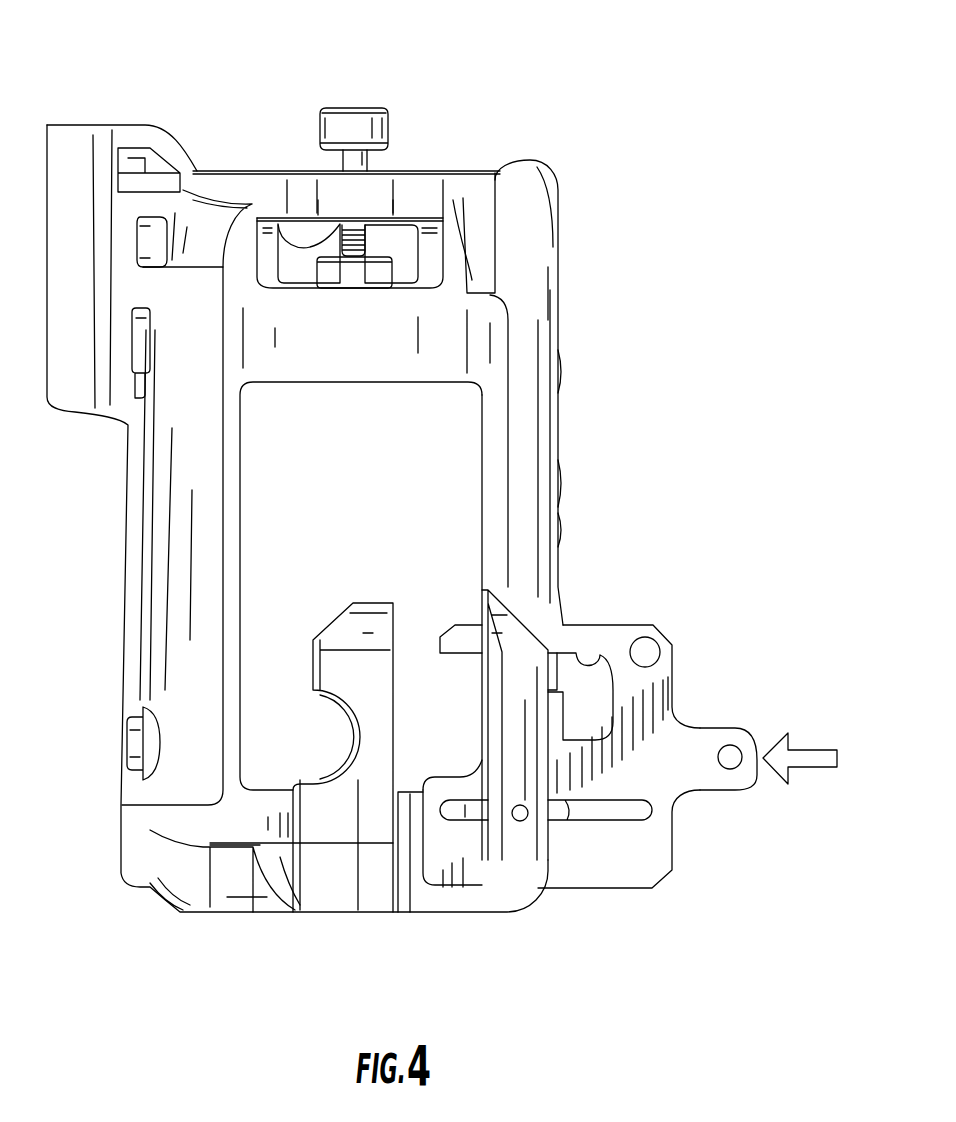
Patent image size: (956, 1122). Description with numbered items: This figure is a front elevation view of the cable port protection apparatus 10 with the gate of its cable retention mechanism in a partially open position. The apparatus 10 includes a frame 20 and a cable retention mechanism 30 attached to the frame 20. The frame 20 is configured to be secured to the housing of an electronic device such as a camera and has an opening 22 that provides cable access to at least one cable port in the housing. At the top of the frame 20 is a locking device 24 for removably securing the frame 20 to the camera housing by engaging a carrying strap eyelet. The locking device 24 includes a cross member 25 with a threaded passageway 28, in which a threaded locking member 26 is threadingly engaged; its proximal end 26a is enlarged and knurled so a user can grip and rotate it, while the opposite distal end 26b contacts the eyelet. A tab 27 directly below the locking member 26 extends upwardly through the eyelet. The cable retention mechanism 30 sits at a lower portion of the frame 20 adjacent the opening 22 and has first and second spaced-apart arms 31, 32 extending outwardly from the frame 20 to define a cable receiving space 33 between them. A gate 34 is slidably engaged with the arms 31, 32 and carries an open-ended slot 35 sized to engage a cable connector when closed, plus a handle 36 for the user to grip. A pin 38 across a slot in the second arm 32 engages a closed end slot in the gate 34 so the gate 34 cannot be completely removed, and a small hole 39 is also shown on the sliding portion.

The cable port protection apparatus 10 is at (686, 237).
The frame 20 is at (458, 177).
The opening 22 is at (518, 440).
The locking device 24 is at (284, 106).
The cross member 25 is at (367, 185).
The threaded locking member 26 is at (358, 108).
The proximal end 26a is at (382, 125).
The distal end 26b is at (350, 256).
The tab 27 is at (367, 277).
The threaded passageway 28 is at (317, 247).
The cable retention mechanism 30 is at (682, 620).
The first arm 31 is at (343, 873).
The second arm 32 is at (520, 655).
The cable receiving space 33 is at (413, 753).
The gate 34 is at (650, 708).
The open-ended slot 35 is at (597, 663).
The handle 36 is at (747, 787).
The pin 38 is at (633, 811).
The hole 39 is at (520, 822).